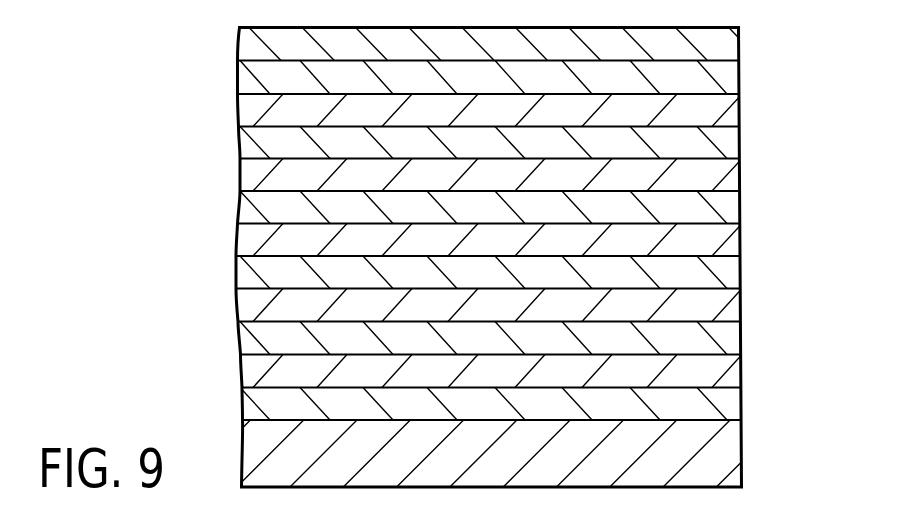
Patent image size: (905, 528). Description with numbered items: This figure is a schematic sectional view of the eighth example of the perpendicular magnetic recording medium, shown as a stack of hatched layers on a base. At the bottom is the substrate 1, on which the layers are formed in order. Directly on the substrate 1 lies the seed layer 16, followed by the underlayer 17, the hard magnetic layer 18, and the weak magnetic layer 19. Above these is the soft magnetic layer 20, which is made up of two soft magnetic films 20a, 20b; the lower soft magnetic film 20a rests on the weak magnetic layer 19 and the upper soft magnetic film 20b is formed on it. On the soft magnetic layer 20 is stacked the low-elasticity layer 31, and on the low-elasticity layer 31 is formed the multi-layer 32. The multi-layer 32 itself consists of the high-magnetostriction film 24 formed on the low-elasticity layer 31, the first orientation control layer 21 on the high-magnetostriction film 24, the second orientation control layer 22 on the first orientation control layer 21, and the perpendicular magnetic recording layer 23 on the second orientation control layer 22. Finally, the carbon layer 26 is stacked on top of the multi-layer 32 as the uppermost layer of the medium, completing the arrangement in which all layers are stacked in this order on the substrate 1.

The substrate 1 is at (723, 456).
The seed layer 16 is at (723, 406).
The underlayer 17 is at (723, 373).
The hard magnetic layer 18 is at (723, 340).
The weak magnetic layer 19 is at (723, 307).
The soft magnetic layer 20 is at (550, 255).
The soft magnetic film 20a is at (723, 274).
The soft magnetic film 20b is at (723, 242).
The low-elasticity layer 31 is at (723, 209).
The high-magnetostriction film 24 is at (515, 175).
The first orientation control layer 21 is at (723, 144).
The second orientation control layer 22 is at (723, 112).
The perpendicular magnetic recording layer 23 is at (723, 79).
The multi-layer 32 is at (546, 125).
The carbon layer 26 is at (723, 46).